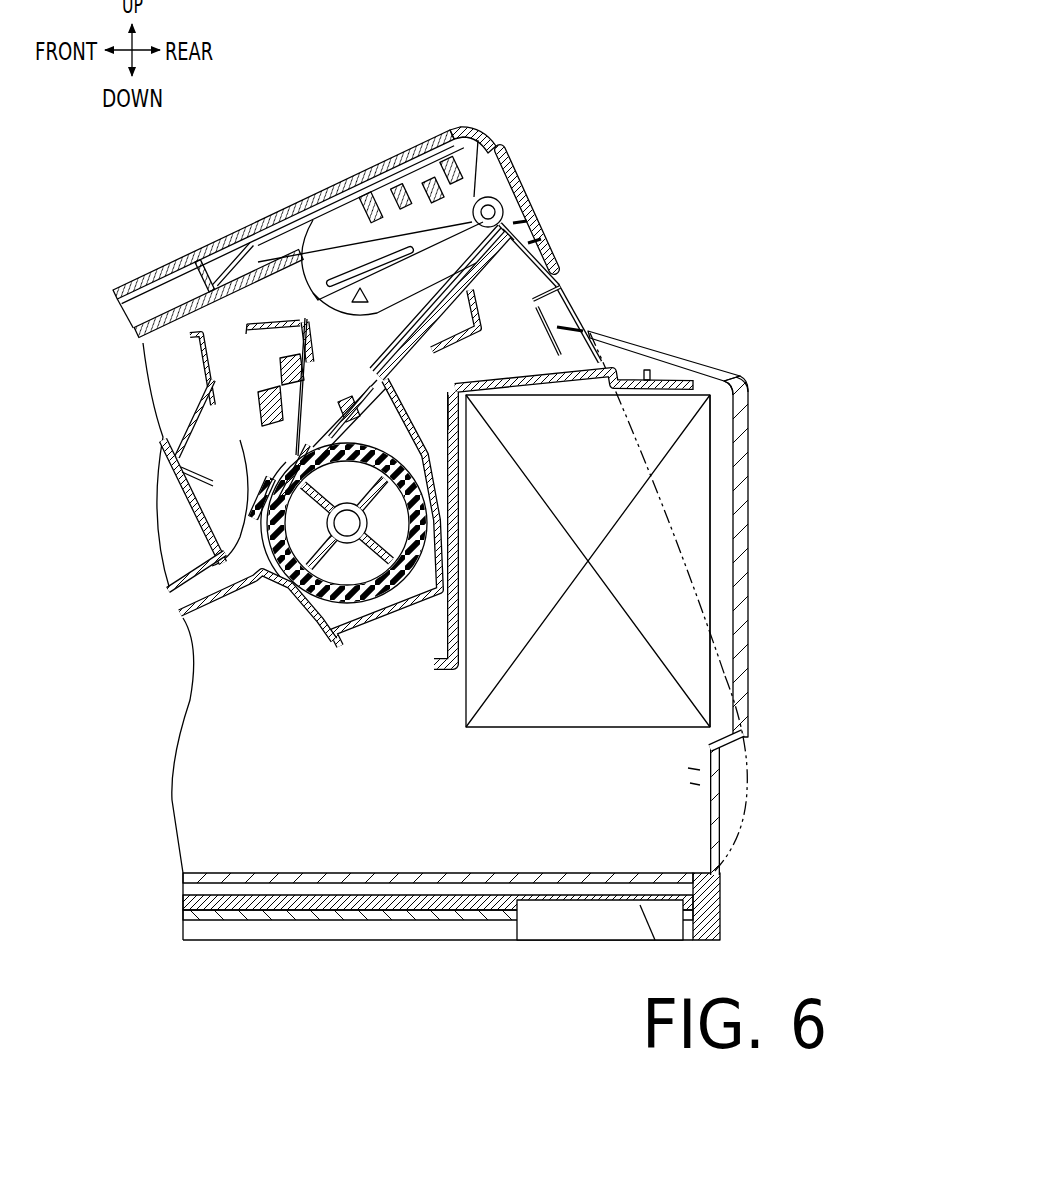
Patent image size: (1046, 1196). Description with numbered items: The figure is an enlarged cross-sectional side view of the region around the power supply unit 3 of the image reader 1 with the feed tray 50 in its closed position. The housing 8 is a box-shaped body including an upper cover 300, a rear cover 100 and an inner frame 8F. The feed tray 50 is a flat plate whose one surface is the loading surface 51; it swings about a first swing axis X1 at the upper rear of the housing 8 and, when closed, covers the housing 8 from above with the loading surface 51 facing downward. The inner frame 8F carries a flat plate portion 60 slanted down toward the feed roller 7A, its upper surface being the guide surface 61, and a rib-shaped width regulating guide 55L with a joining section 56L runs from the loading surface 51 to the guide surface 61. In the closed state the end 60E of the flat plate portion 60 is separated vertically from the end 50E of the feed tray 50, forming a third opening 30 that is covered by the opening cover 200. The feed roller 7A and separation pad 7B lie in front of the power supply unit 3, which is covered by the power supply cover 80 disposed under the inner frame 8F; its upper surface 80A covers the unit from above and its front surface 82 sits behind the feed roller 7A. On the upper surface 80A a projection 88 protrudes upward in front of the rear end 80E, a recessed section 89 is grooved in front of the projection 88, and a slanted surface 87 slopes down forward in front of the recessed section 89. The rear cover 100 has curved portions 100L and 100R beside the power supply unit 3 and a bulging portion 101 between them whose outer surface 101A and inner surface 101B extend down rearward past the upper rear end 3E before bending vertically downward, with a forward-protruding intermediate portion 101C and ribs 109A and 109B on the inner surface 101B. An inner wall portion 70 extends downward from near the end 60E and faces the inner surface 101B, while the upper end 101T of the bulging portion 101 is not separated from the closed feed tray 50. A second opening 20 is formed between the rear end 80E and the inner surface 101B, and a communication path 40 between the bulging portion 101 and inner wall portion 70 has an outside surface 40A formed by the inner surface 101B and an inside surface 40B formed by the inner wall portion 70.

The image reader 1 is at (694, 78).
The power supply unit 3 is at (597, 676).
The upper rear end of the power supply unit 3E is at (745, 494).
The feed roller 7A is at (330, 575).
The separation pad 7B is at (262, 484).
The housing 8 is at (764, 816).
The inner frame 8F is at (215, 608).
The second opening 20 is at (682, 375).
The third opening 30 is at (506, 193).
The communication path 40 is at (643, 370).
The outside surface of the communication path 40A is at (616, 357).
The inside surface of the communication path 40B is at (546, 365).
The feed tray 50 is at (171, 255).
The end of the feed tray 50E is at (481, 125).
The loading surface 51 is at (183, 316).
The width regulating guide 55L is at (347, 263).
The joining section 56L is at (412, 153).
The flat plate portion 60 is at (396, 362).
The end of the flat plate portion 60E is at (514, 238).
The guide surface 61 is at (414, 334).
The inner wall portion 70 is at (402, 380).
The power supply cover 80 is at (440, 640).
The upper surface of the power supply cover 80A is at (500, 432).
The rear end of the upper surface 80E is at (696, 394).
The front surface of the power supply cover 82 is at (438, 607).
The slanted surface 87 is at (553, 378).
The projection 88 is at (674, 366).
The recessed section 89 is at (666, 372).
The rear cover 100 is at (750, 377).
The curved portion 100L is at (696, 579).
The curved portion 100R is at (795, 726).
The bulging portion 101 is at (748, 542).
The outer surface of the bulging portion 101A is at (712, 366).
The inner surface of the bulging portion 101B is at (719, 390).
The intermediate portion 101C is at (604, 337).
The upper end of the bulging portion 101T is at (556, 288).
The rib 109A is at (577, 345).
The rib 109B is at (612, 352).
The opening cover 200 is at (488, 157).
The upper cover 300 is at (163, 316).
The first swing axis X1 is at (480, 214).